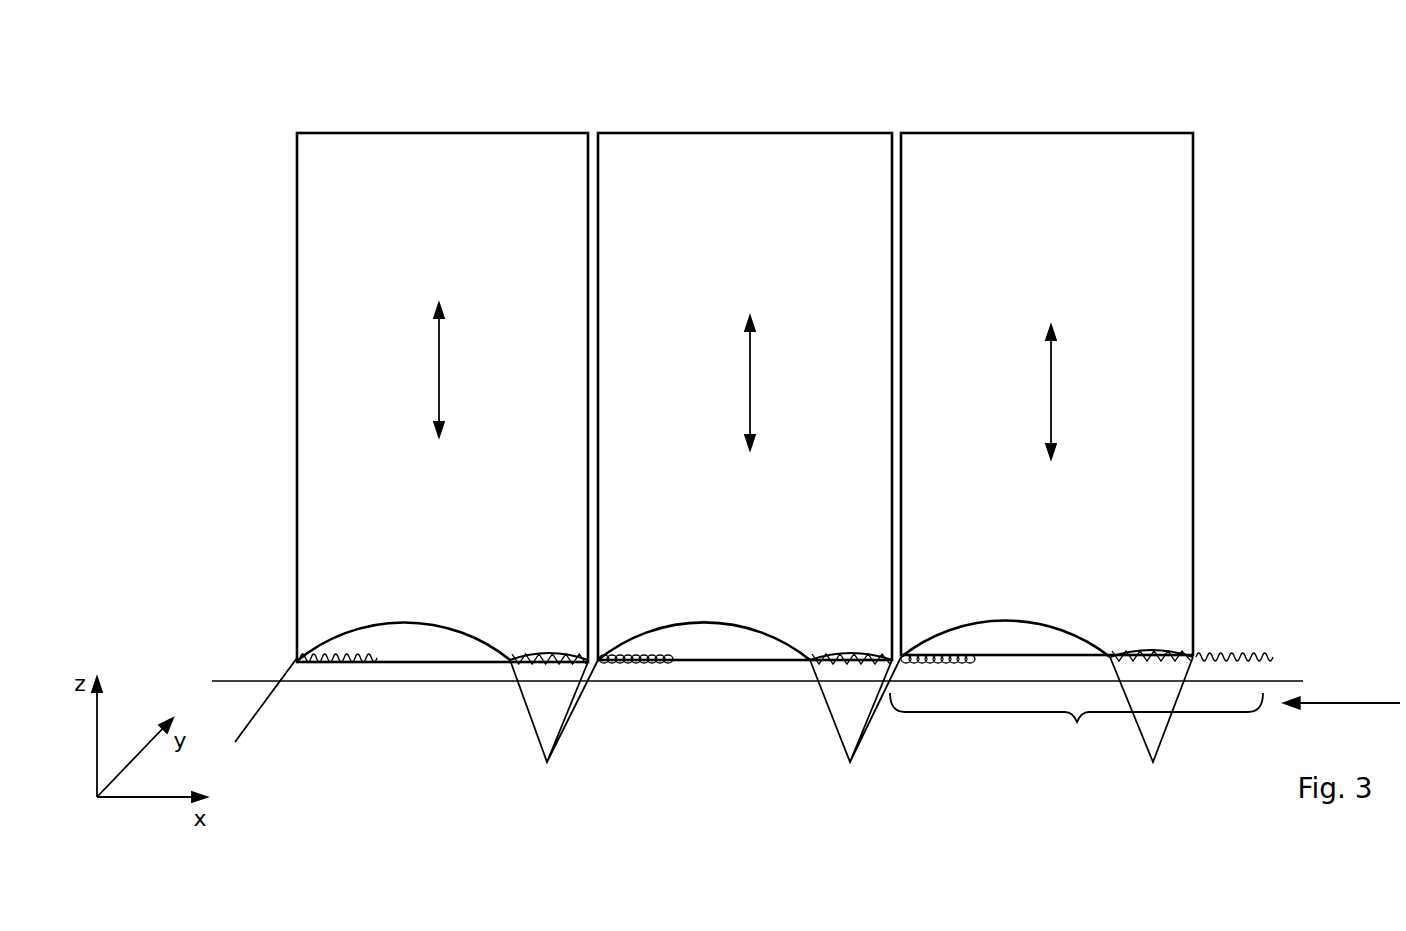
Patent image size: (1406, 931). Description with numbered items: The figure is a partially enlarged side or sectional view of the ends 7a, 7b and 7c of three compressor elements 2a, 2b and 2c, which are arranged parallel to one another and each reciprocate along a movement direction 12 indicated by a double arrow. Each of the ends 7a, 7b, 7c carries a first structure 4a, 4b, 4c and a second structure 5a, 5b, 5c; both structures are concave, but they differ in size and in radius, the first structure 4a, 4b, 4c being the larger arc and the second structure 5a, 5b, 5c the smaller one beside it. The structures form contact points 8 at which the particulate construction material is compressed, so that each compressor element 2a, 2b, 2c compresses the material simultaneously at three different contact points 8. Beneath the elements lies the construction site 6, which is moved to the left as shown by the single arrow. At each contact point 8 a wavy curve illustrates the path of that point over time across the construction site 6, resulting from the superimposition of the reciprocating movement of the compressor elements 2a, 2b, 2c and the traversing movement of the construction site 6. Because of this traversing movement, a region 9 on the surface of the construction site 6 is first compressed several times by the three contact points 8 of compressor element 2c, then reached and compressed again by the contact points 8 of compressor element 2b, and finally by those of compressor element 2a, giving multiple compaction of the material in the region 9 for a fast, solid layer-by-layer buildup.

The compressor element 2a is at (438, 157).
The compressor element 2b is at (738, 157).
The compressor element 2c is at (1050, 173).
The first structure 4a is at (402, 612).
The first structure 4b is at (705, 612).
The first structure 4c is at (1008, 609).
The second structure 5a is at (542, 646).
The second structure 5b is at (845, 646).
The second structure 5c is at (1148, 642).
The construction site 6 is at (1279, 680).
The end 7a is at (436, 665).
The end 7b is at (745, 665).
The end 7c is at (1044, 667).
The contact points 8 is at (706, 724).
The region 9 is at (1076, 724).
The movement direction 12 is at (439, 369).